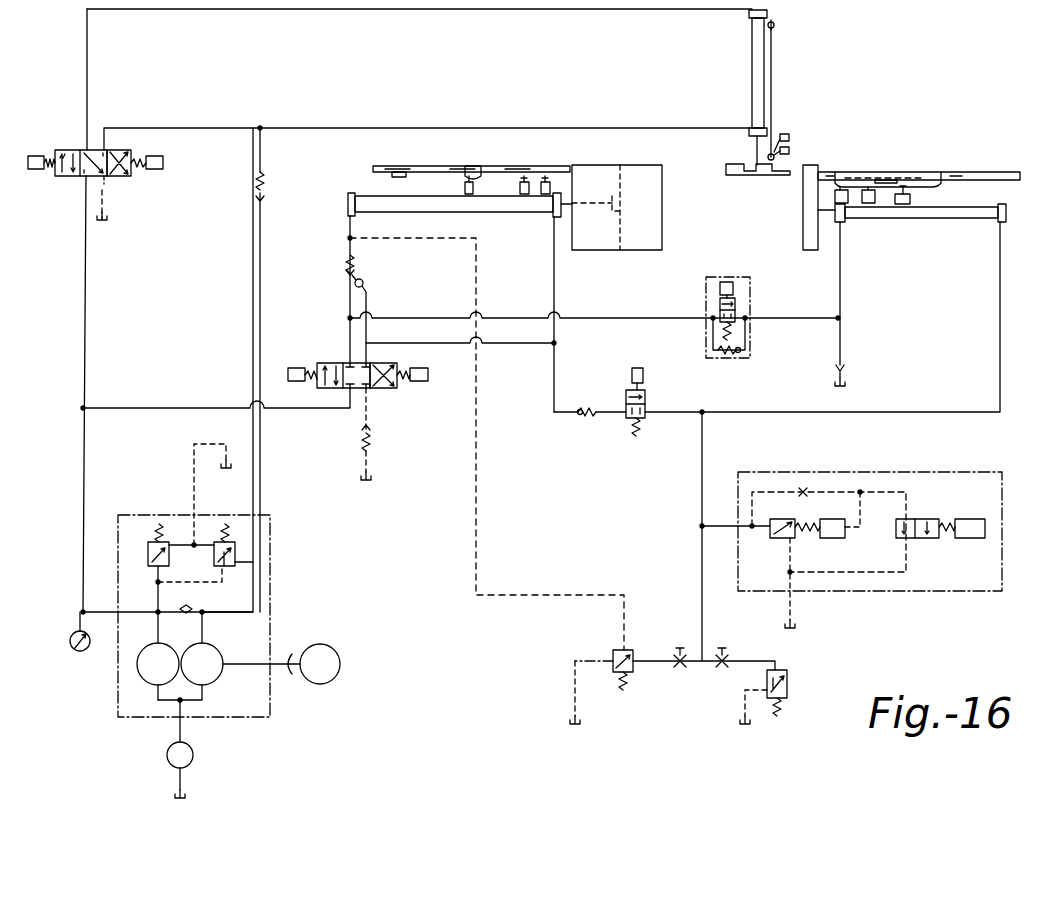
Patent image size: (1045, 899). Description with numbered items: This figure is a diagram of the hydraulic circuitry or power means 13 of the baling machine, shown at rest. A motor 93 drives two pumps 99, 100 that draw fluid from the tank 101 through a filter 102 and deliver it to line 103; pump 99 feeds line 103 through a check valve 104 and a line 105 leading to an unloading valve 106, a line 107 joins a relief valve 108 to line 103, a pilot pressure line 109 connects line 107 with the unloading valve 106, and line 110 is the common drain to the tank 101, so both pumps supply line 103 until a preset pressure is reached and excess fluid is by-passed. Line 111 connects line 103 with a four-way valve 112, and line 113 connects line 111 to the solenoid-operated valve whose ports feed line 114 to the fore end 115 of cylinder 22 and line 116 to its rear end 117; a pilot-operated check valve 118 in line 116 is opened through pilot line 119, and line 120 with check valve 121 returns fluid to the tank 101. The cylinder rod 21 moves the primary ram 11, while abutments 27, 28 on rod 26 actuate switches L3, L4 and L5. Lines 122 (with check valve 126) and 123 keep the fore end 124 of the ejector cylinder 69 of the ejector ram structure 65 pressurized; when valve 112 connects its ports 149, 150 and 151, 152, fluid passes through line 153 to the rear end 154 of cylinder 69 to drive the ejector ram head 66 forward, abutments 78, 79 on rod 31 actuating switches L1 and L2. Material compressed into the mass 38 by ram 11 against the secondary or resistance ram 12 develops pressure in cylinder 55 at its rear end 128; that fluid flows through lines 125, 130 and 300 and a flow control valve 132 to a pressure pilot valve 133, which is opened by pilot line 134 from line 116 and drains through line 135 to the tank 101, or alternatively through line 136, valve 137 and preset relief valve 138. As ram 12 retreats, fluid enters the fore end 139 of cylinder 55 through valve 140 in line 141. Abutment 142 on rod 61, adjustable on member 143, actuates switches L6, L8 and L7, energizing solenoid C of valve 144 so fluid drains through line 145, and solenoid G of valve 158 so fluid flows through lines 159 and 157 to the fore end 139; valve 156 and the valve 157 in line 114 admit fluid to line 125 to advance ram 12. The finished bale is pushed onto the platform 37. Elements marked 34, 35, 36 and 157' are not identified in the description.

The primary ram 11 is at (662, 192).
The secondary or resistance ram 12 is at (803, 198).
The power means 13 is at (886, 94).
The cylinder rod 21 is at (578, 203).
The cylinder 22 is at (440, 206).
The rod 26 is at (435, 168).
The abutment 27 is at (480, 180).
The abutment 28 is at (402, 178).
The rod 31 is at (772, 55).
The cylinder 55 is at (982, 218).
The rod 61 is at (996, 172).
The ejector ram structure 65 is at (792, 104).
The ejector ram head 66 is at (745, 178).
The cylinder 69 is at (752, 50).
The abutment 78 is at (776, 157).
The abutment 79 is at (775, 28).
The motor 93 is at (334, 678).
The pump 99 is at (212, 683).
The pump 100 is at (154, 683).
The storage tank or reservoir 101 is at (105, 222).
The filter 102 is at (193, 757).
The pipe or line 103 is at (150, 614).
The check valve 104 is at (184, 615).
The line 105 is at (228, 614).
The unloading valve 106 is at (218, 566).
The line 107 is at (158, 582).
The relief valve 108 is at (148, 549).
The pilot pressure line 109 is at (182, 582).
The drain line 110 is at (174, 547).
The line 111 is at (83, 326).
The four-way valve 112 is at (131, 176).
The line 113 is at (164, 409).
The line 114 is at (554, 280).
The fore end 115 is at (556, 217).
The line 116 is at (350, 254).
The rear end 117 is at (348, 203).
The check valve 118 is at (356, 258).
The pilot line 119 is at (370, 294).
The line 120 is at (366, 426).
The check valve 121 is at (368, 451).
The line 122 is at (260, 153).
The line 123 is at (530, 134).
The fore end 124 is at (749, 132).
The line 125 is at (1000, 268).
The check valve 126 is at (256, 187).
The rear end 128 is at (1006, 212).
The line 130 is at (702, 461).
The flow control valve 132 is at (684, 645).
The pressure pilot valve 133 is at (638, 676).
The pilot line 134 is at (476, 462).
The line 135 is at (575, 690).
The line 136 is at (696, 670).
The valve 137 is at (720, 646).
The relief valve 138 is at (787, 686).
The fore end 139 is at (843, 227).
The valve 140 is at (842, 366).
The line 141 is at (840, 288).
The abutment 142 is at (887, 187).
The member 143 is at (870, 172).
The valve 144 is at (961, 472).
The line 145 is at (708, 528).
The port 149 is at (78, 176).
The port 150 is at (90, 148).
The port 151 is at (112, 150).
The port 152 is at (106, 182).
The line 153 is at (578, 10).
The rear end 154 is at (749, 17).
The valve 156 is at (645, 401).
The valve 157 is at (692, 373).
The line 157' is at (533, 390).
The valve 158 is at (745, 292).
The line 159 is at (645, 317).
The line 300 is at (702, 566).
The switch L1 is at (789, 150).
The switch L2 is at (789, 136).
The switch L3 is at (465, 190).
The switch L4 is at (528, 178).
The switch L5 is at (546, 177).
The switch L6 is at (848, 203).
The switch L7 is at (910, 202).
The switch L8 is at (871, 203).
The solenoid 34 is at (397, 388).
The solenoid 35 is at (345, 388).
The valve section 36 is at (370, 364).
The platform 37 is at (366, 388).
The mass 38 is at (350, 363).